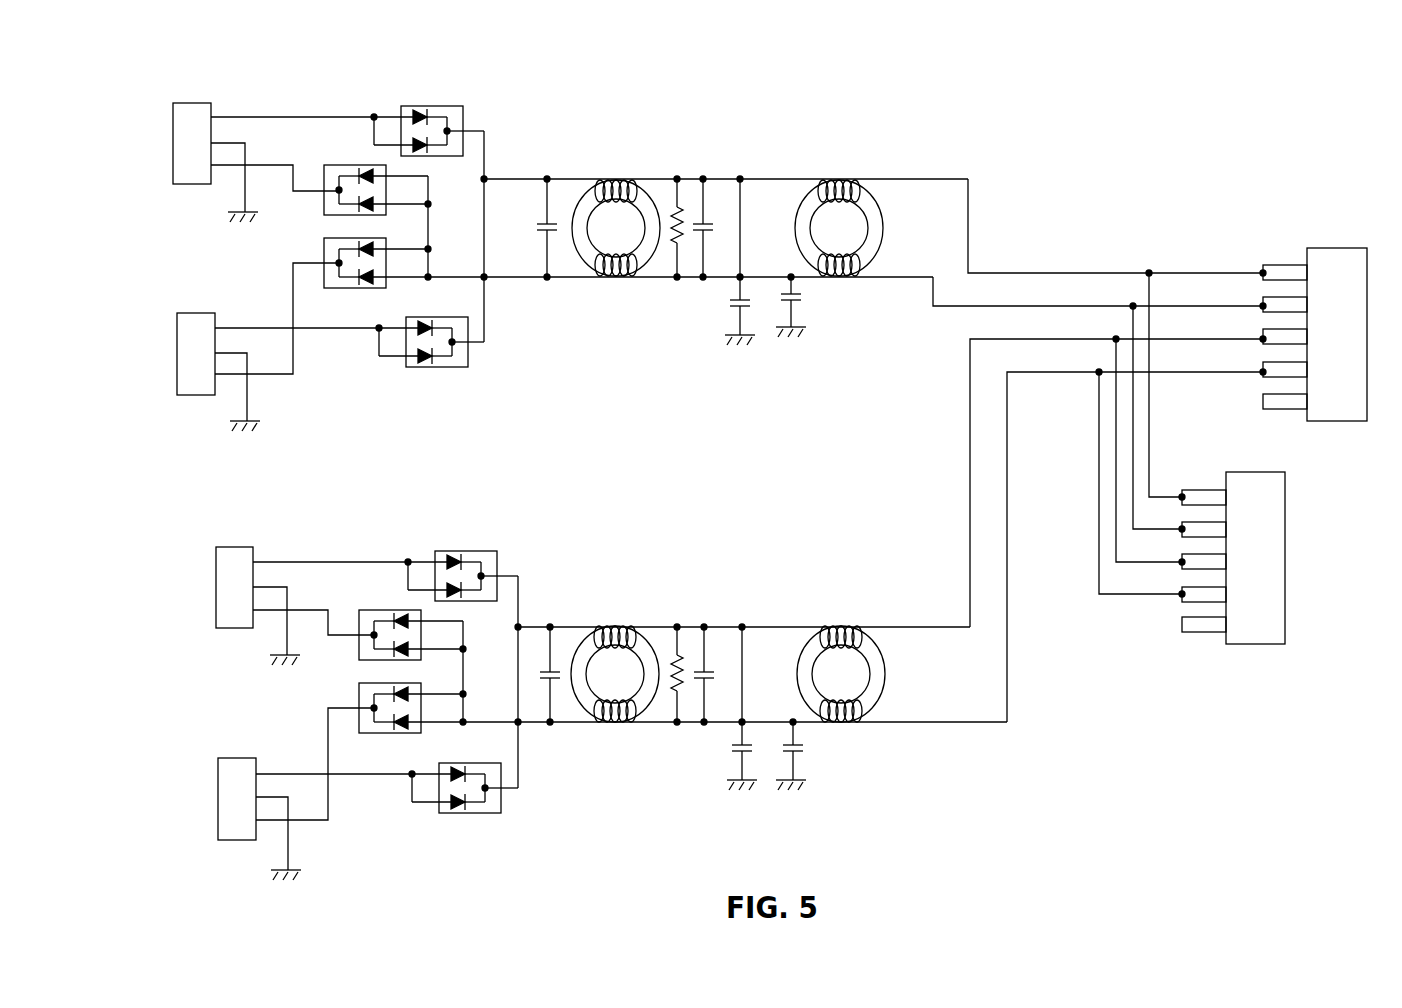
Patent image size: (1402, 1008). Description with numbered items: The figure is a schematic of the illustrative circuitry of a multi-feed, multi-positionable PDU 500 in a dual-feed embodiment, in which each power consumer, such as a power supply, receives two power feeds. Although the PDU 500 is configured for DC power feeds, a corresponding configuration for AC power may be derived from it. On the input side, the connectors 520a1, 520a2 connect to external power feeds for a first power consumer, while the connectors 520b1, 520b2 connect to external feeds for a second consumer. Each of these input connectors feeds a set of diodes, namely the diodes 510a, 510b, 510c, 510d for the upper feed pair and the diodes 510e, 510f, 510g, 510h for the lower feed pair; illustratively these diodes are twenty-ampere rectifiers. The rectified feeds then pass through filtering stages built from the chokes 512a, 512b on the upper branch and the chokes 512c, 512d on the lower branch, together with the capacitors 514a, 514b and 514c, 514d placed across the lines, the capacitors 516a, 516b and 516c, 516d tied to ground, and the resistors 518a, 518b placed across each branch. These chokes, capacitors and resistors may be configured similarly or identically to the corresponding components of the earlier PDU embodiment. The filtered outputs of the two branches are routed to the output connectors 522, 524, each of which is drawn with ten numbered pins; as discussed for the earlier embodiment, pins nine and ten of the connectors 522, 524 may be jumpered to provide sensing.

The PDU 500 is at (770, 478).
The diode 510a is at (436, 117).
The diode 510b is at (371, 193).
The diode 510c is at (350, 262).
The diode 510d is at (451, 353).
The diode 510e is at (473, 562).
The diode 510f is at (404, 639).
The diode 510g is at (386, 708).
The diode 510h is at (482, 800).
The choke 512a is at (616, 228).
The choke 512b is at (839, 228).
The choke 512c is at (615, 674).
The choke 512d is at (841, 674).
The capacitor 514a is at (527, 228).
The capacitor 514b is at (703, 212).
The capacitor 514c is at (550, 695).
The capacitor 514d is at (705, 655).
The capacitor 516a is at (719, 260).
The capacitor 516b is at (814, 305).
The capacitor 516c is at (719, 707).
The capacitor 516d is at (816, 754).
The resistor 518a is at (675, 200).
The resistor 518b is at (675, 645).
The connector 520a1 is at (192, 103).
The connector 520a2 is at (193, 395).
The connector 520b1 is at (232, 547).
The connector 520b2 is at (236, 840).
The connector 522 is at (1329, 248).
The connector 524 is at (1252, 644).